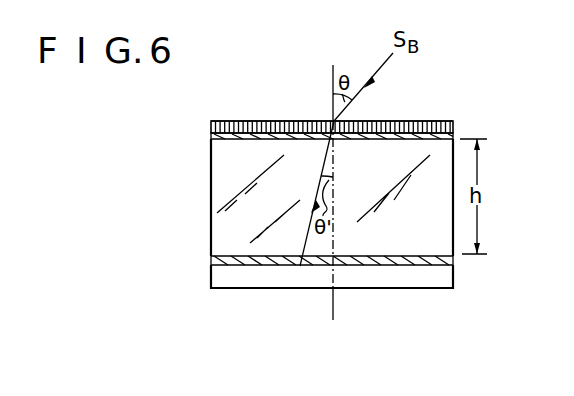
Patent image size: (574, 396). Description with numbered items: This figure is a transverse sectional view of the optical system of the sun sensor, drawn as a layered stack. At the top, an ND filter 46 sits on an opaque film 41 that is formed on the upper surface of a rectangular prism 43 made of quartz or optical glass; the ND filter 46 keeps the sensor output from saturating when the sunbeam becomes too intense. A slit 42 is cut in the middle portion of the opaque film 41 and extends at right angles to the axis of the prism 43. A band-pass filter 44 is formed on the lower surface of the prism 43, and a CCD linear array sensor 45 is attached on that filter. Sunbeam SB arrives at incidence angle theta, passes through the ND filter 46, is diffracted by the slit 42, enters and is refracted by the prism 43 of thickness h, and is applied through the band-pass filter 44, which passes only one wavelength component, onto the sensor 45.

The opaque film 41 is at (210, 138).
The slit 42 is at (324, 121).
The rectangular prism 43 is at (210, 193).
The band-pass filter 44 is at (211, 263).
The CCD linear array sensor 45 is at (272, 289).
The ND filter 46 is at (403, 121).